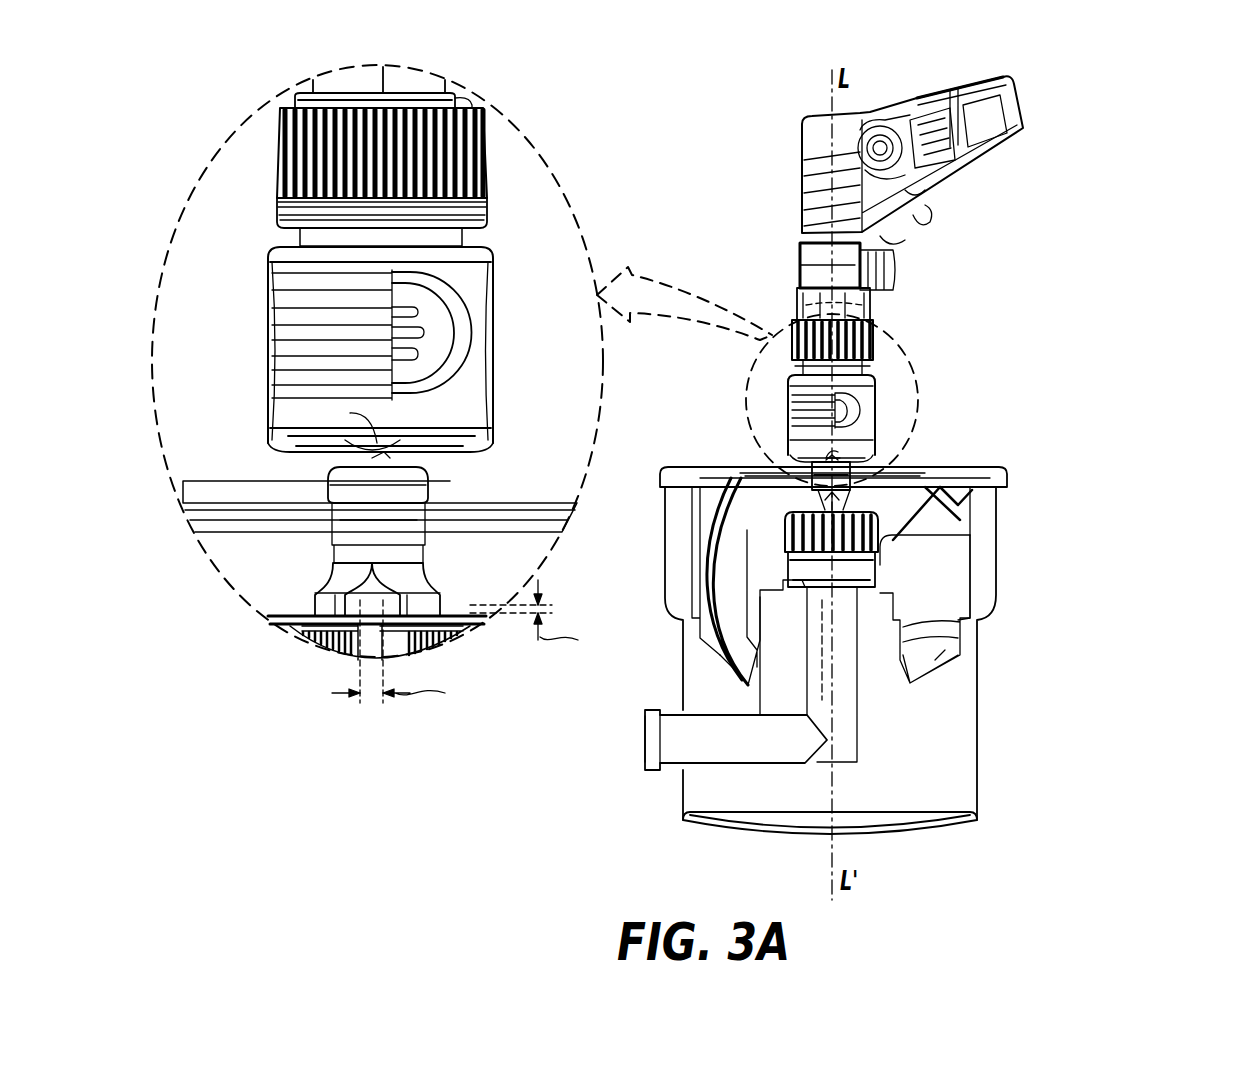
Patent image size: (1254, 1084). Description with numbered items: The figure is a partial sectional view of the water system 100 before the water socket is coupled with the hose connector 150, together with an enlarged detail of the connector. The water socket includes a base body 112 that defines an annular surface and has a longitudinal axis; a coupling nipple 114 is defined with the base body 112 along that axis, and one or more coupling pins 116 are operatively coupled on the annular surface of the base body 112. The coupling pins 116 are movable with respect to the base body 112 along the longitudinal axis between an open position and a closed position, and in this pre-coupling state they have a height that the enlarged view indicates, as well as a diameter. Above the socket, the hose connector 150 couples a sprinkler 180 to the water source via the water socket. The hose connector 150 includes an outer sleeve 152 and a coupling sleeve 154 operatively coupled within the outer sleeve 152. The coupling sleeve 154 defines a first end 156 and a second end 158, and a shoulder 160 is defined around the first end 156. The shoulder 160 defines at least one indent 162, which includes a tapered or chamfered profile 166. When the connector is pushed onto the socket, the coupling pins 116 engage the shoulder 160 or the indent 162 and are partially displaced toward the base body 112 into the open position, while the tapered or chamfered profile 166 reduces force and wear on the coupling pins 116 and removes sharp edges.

The water system 100 is at (1140, 96).
The sprinkler 180 is at (1016, 97).
The hose connector 150 is at (515, 255).
The outer sleeve 152 is at (268, 258).
The coupling sleeve 154 is at (873, 345).
The first end 156 is at (486, 452).
The second end 158 is at (478, 108).
The shoulder 160 is at (378, 450).
The indent 162 is at (450, 481).
The tapered or chamfered profile 166 is at (350, 413).
The coupling nipple 114 is at (330, 473).
The coupling pins 116 is at (330, 598).
The base body 112 is at (313, 643).